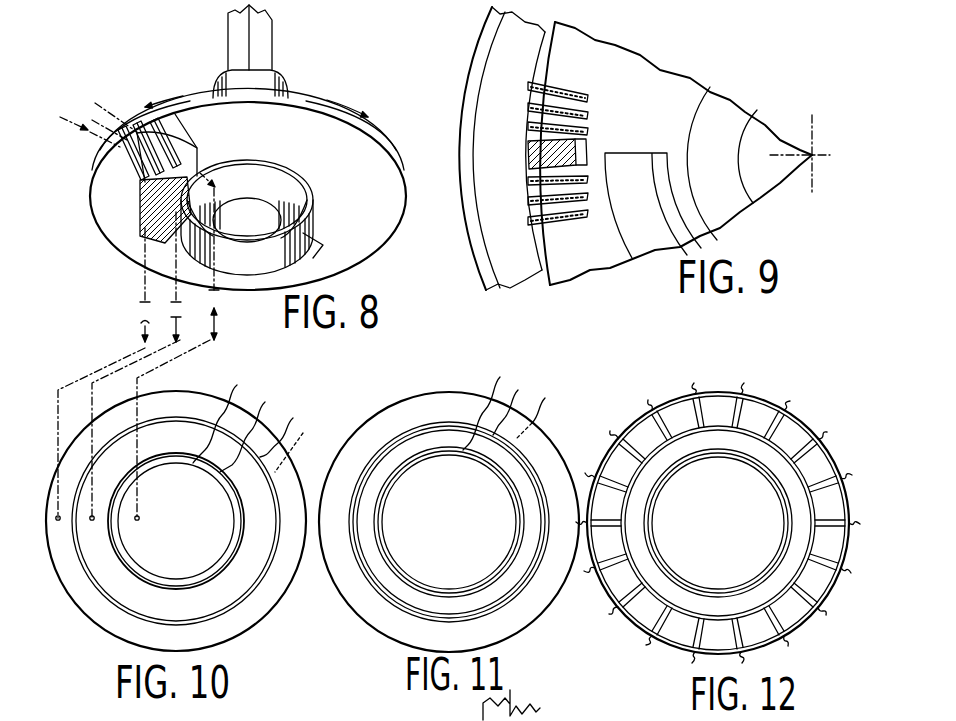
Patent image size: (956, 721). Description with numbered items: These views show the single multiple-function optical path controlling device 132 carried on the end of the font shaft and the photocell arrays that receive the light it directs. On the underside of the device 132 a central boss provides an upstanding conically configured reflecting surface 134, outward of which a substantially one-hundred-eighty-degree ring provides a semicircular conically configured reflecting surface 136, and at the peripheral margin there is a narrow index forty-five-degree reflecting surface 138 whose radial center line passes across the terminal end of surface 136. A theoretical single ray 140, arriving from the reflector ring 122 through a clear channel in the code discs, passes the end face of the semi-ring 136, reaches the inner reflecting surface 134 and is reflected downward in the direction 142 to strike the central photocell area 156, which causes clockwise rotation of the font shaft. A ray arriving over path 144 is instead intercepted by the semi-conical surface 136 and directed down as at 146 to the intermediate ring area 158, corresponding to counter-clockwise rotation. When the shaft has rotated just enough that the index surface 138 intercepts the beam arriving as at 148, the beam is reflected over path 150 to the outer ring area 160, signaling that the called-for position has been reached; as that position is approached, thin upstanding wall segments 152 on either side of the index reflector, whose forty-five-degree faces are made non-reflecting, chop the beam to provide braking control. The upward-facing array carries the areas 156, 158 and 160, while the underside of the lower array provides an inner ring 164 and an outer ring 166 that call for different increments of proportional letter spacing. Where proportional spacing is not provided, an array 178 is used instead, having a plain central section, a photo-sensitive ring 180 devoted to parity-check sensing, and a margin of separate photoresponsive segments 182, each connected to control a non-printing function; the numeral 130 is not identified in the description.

In FIG. 9, the reflector ring 122 is at (523, 247).
In FIG. 11, the base portion 130 is at (536, 712).
In FIG. 8, the multiple-function optical path controlling device 132 is at (407, 133).
In FIG. 8, the conically configured reflecting surface 134 is at (280, 175).
In FIG. 9, the conically configured reflecting surface 134 is at (696, 112).
In FIG. 8, the semicircular conically configured reflecting surface 136 is at (175, 182).
In FIG. 9, the semicircular conically configured reflecting surface 136 is at (634, 170).
In FIG. 8, the index 45-degree reflecting surface 138 is at (137, 133).
In FIG. 9, the index 45-degree reflecting surface 138 is at (532, 152).
In FIG. 8, the single ray of light 140 is at (93, 101).
In FIG. 8, the direction of reflected light 142 is at (220, 296).
In FIG. 8, the ray path 144 is at (75, 125).
In FIG. 8, the downward light path 146 is at (176, 290).
In FIG. 8, the arriving beam 148 is at (90, 118).
In FIG. 8, the reflected beam path 150 is at (146, 282).
In FIG. 8, the upstanding wall segments 152 is at (165, 133).
In FIG. 9, the upstanding wall segments 152 is at (562, 120).
In FIG. 10, the central photocell area 156 is at (196, 511).
In FIG. 10, the intermediate ring area 158 is at (186, 442).
In FIG. 10, the outer ring area 160 is at (200, 411).
In FIG. 11, the inner ring 164 is at (376, 486).
In FIG. 11, the outer ring 166 is at (456, 415).
In FIG. 12, the photocell array 178 is at (700, 388).
In FIG. 12, the photo-sensitive ring 180 is at (805, 511).
In FIG. 12, the photoresponsive segments 182 is at (732, 452).